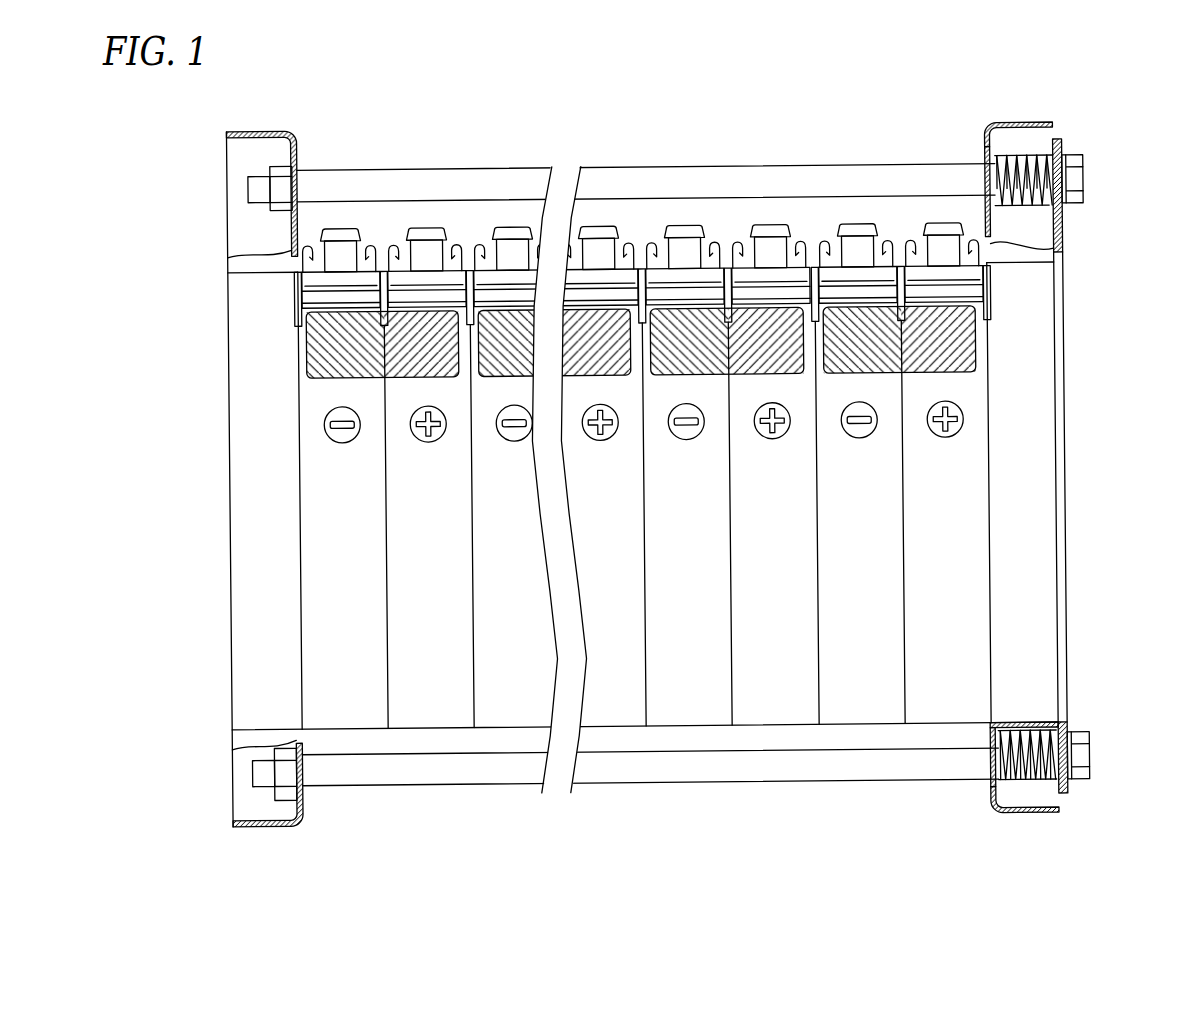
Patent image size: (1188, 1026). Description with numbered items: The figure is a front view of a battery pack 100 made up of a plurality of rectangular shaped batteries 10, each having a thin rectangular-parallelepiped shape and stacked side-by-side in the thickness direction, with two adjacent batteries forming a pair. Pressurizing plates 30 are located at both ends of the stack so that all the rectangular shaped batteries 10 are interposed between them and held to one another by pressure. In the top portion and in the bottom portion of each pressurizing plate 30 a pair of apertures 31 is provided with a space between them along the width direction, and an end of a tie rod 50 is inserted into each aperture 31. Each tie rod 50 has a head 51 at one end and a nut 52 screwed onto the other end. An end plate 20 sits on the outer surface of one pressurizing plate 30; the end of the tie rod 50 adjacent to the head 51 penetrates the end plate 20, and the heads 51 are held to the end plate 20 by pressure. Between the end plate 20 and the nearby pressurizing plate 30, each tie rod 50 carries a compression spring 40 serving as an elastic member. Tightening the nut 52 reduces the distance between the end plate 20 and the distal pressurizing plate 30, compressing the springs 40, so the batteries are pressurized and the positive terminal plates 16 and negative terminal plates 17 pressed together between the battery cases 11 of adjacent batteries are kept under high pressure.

The battery pack 100 is at (1075, 88).
The rectangular shaped battery 10 is at (818, 222).
The battery case 11 is at (343, 720).
The positive terminal plate 16 is at (406, 377).
The negative terminal plate 17 is at (322, 347).
The end plate 20 is at (1063, 489).
The pressurizing plate 30 is at (293, 225).
The aperture 31 is at (990, 160).
The compression spring 40 is at (1030, 161).
The tie rod 50 is at (725, 169).
The head 51 is at (1083, 201).
The nut 52 is at (265, 181).